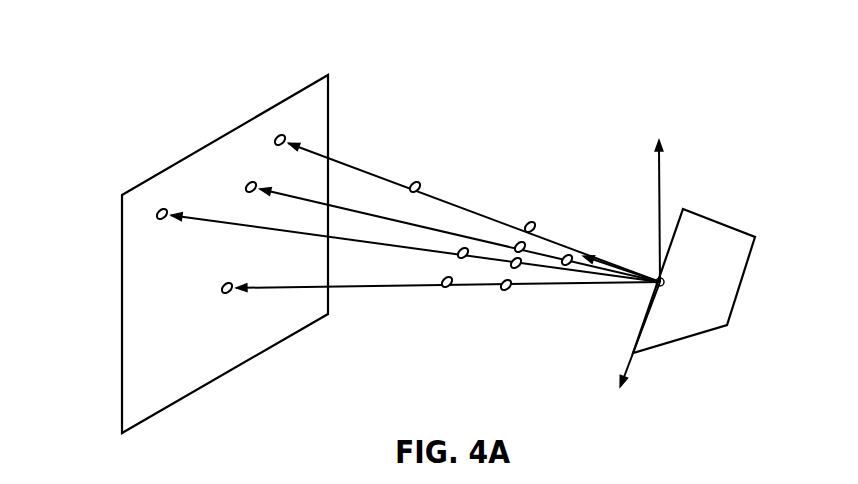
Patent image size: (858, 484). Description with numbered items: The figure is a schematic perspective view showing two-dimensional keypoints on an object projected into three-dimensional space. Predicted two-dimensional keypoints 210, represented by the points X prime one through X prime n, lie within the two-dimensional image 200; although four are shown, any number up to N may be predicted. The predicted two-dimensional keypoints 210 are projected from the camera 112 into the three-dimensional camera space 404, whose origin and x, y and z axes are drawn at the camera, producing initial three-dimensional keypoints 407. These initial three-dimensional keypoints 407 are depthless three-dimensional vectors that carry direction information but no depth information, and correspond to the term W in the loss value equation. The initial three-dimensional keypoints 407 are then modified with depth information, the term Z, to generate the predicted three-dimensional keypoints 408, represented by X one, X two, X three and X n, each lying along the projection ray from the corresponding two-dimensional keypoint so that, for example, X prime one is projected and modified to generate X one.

The 2D image 200 is at (330, 102).
The predicted 2D keypoints 210 is at (247, 183).
The 3D camera space 404 is at (538, 79).
The initial 3D keypoints 407 is at (518, 241).
The predicted 3D keypoints 408 is at (410, 181).
The camera 112 is at (718, 240).